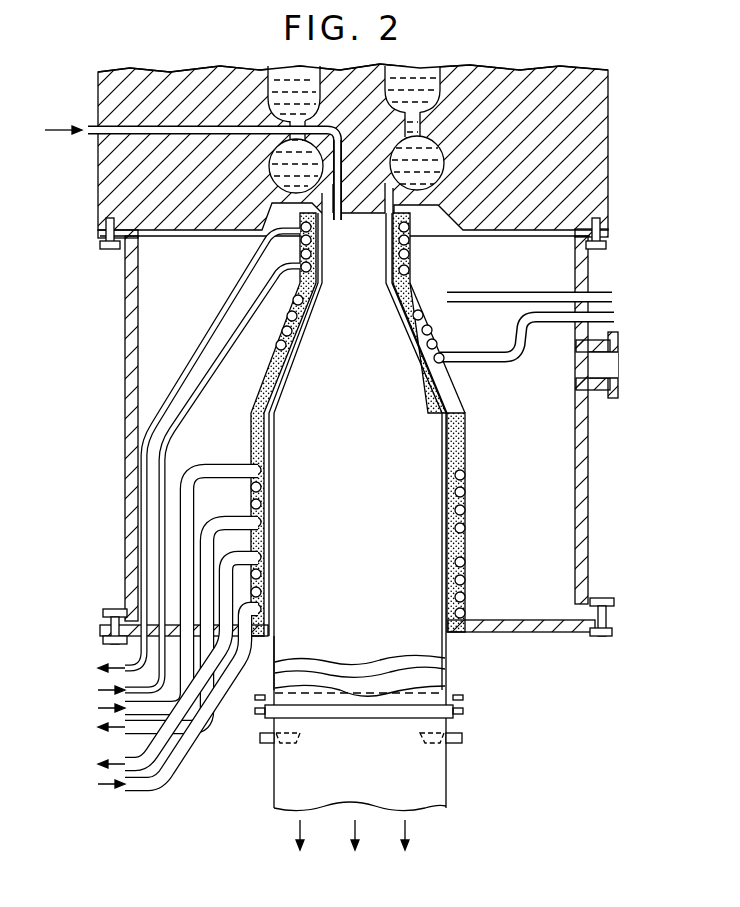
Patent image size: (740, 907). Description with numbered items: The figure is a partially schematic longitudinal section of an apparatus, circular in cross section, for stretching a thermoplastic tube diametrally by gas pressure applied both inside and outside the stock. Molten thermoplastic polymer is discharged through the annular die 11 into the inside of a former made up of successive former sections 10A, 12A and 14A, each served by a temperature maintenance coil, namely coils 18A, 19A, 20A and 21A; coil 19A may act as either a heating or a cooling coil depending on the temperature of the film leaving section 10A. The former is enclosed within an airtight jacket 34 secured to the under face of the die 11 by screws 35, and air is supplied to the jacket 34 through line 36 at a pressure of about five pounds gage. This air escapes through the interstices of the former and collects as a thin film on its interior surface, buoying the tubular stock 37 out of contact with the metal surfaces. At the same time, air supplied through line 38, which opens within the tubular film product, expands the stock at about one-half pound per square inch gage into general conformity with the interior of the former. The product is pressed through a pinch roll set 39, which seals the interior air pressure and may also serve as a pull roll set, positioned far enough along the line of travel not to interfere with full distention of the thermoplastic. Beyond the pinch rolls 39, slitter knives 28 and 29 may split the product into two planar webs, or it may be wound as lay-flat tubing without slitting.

The former section 10A is at (409, 256).
The annular die 11 is at (333, 222).
The former section 12A is at (432, 350).
The former section 14A is at (460, 548).
The temperature maintenance coil 18A is at (410, 270).
The temperature maintenance coil 19A is at (424, 315).
The temperature maintenance coil 20A is at (466, 476).
The temperature maintenance coil 21A is at (466, 562).
The slitter knife 28 is at (264, 745).
The slitter knife 29 is at (463, 738).
The airtight jacket 34 is at (125, 458).
The screws 35 is at (108, 249).
The line 36 is at (620, 360).
The tubular stock 37 is at (300, 338).
The line 38 is at (86, 133).
The pinch roll set 39 is at (463, 710).